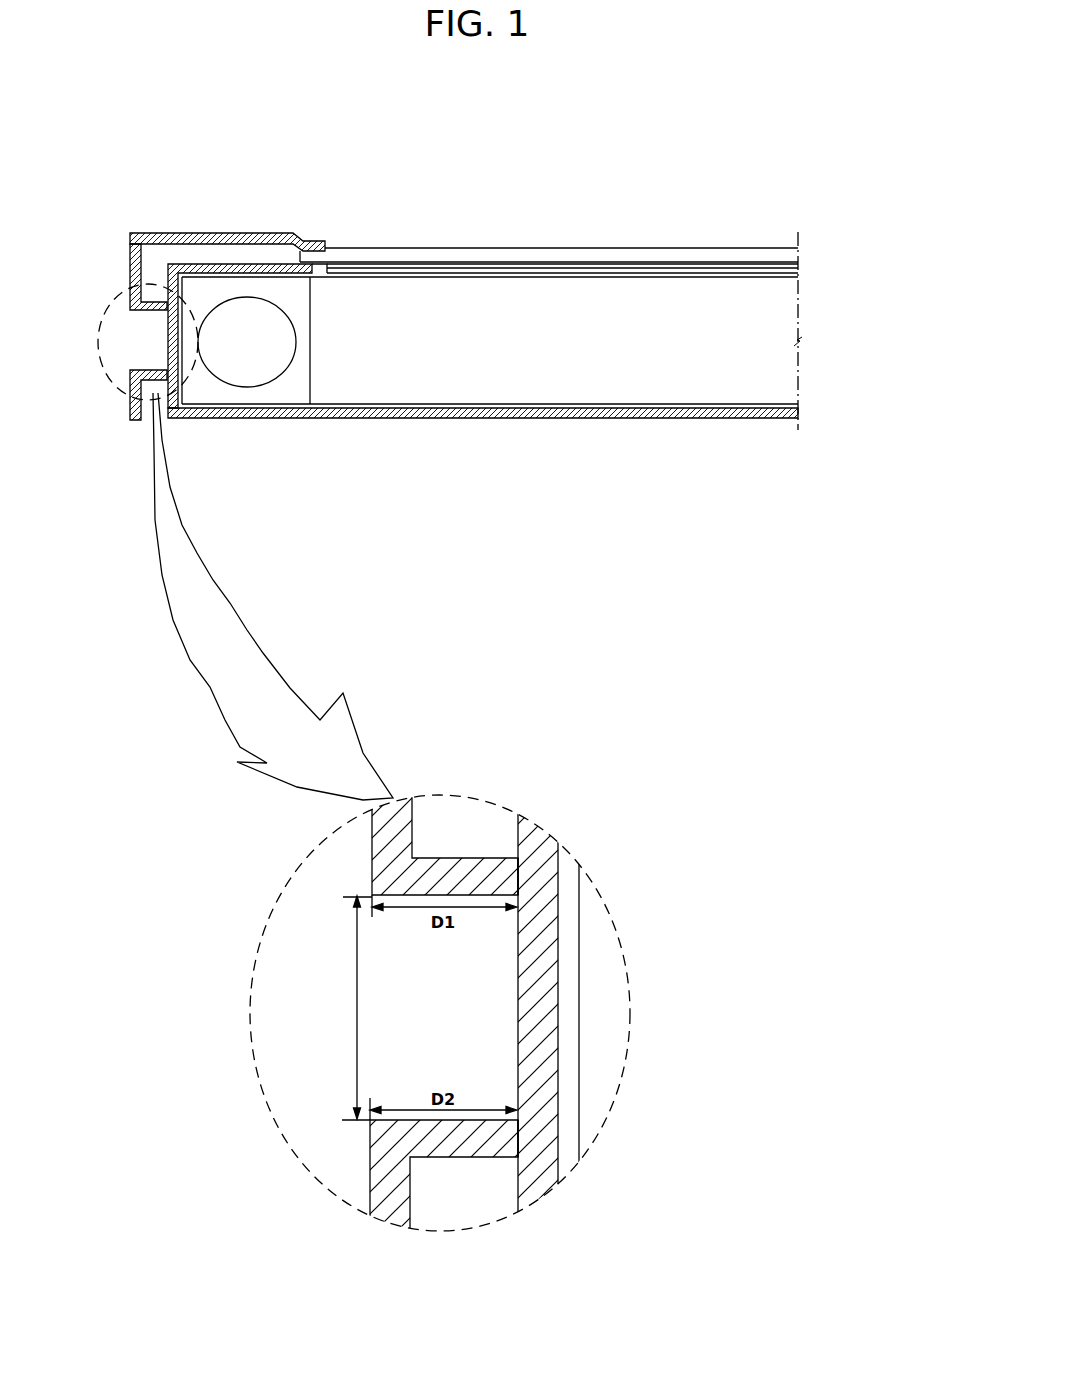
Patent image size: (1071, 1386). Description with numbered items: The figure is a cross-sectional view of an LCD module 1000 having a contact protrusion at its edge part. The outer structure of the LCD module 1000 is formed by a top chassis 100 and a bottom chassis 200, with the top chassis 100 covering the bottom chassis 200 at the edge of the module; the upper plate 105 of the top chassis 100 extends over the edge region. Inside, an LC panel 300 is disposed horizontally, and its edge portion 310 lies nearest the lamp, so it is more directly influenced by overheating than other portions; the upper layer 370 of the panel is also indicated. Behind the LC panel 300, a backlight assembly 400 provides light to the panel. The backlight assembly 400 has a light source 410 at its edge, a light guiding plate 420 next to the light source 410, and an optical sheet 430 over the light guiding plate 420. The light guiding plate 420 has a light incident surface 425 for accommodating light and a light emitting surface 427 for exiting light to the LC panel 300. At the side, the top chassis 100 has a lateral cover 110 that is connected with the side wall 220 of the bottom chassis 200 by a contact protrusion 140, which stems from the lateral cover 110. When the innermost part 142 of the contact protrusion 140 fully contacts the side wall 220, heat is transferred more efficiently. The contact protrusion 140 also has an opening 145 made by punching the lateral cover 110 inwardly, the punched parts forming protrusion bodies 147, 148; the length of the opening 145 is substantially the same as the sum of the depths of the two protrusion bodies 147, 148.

The LCD module 1000 is at (722, 103).
The top chassis 100 is at (70, 225).
The top plate of top chassis 105 is at (177, 233).
The lateral cover 110 is at (129, 251).
The bottom chassis 200 is at (545, 418).
The side wall 220 is at (167, 341).
The LC panel 300 is at (478, 172).
The edge portion 310 is at (341, 241).
The second substrate 370 is at (539, 241).
The backlight assembly 400 is at (857, 268).
The light source 410 is at (258, 366).
The light guiding plate 420 is at (778, 383).
The light incident surface 425 is at (312, 405).
The light emitting surface 427 is at (797, 273).
The optical sheet 430 is at (798, 265).
The contact protrusion 140 is at (304, 983).
The innermost part 142 is at (523, 871).
The opening 145 is at (436, 1035).
The protrusion body 147 is at (403, 897).
The protrusion body 148 is at (412, 1120).